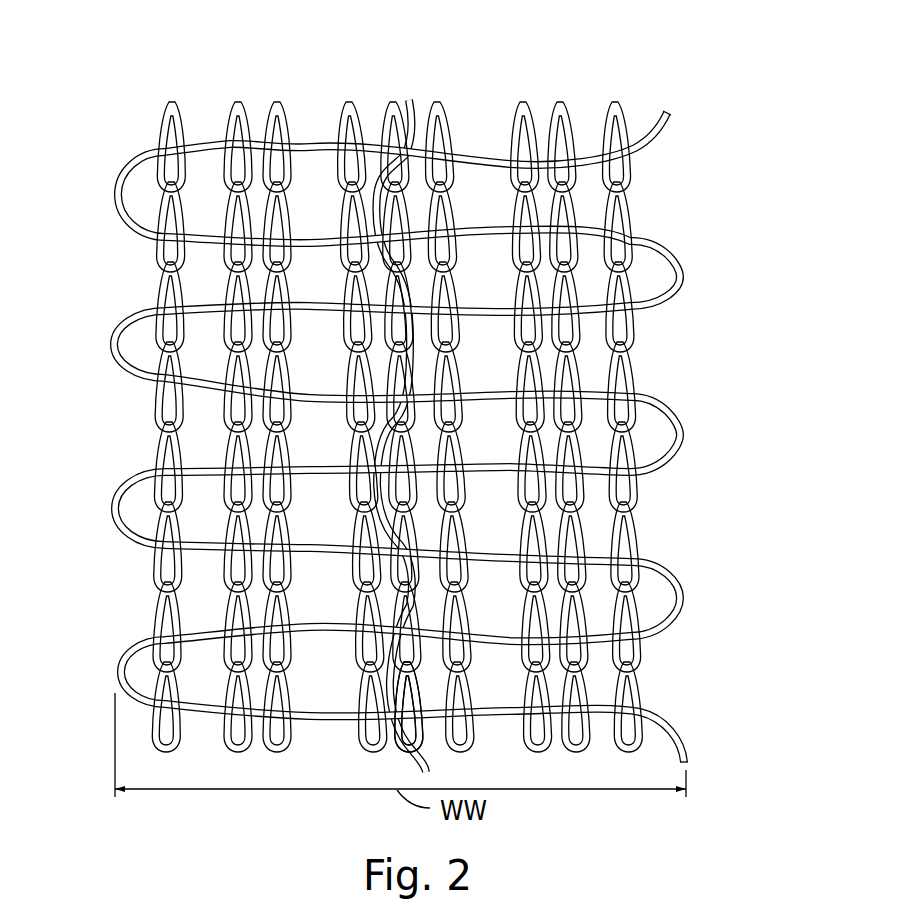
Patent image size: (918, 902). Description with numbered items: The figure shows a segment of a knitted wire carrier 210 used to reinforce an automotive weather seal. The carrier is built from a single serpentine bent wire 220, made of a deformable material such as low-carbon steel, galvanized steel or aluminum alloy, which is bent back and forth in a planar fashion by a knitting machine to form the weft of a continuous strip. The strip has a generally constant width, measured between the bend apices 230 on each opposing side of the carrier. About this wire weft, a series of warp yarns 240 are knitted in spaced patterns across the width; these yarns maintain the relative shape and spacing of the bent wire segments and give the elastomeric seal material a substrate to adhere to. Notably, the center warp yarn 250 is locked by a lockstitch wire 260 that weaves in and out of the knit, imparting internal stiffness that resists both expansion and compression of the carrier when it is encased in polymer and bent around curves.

The knitted wire carrier 210 is at (532, 66).
The serpentine bent wire 220 is at (670, 136).
The bend apices 230 is at (113, 350).
The warp yarns 240 is at (275, 103).
The center warp yarn 250 is at (400, 758).
The lockstitch wire 260 is at (430, 767).